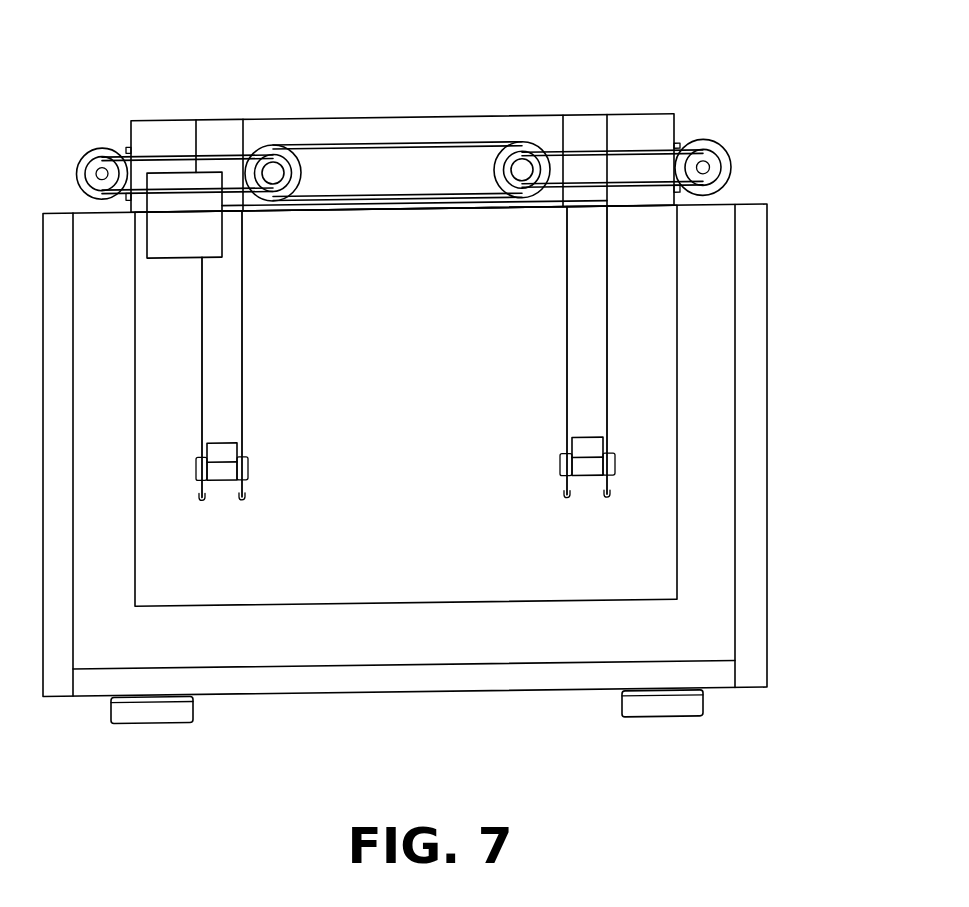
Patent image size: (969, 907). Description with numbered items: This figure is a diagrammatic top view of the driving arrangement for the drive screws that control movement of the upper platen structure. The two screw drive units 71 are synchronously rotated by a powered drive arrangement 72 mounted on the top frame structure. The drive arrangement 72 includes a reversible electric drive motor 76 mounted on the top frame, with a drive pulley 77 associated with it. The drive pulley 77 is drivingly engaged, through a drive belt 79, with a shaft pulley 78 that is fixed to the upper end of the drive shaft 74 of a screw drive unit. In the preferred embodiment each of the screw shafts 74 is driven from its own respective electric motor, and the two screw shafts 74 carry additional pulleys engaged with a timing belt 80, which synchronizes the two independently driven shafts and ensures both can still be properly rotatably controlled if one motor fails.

The screw drive unit 71 is at (268, 216).
The drive arrangement 72 is at (507, 226).
The drive shaft 74 is at (270, 147).
The reversible electric drive motor 76 is at (727, 182).
The drive pulley 77 is at (707, 164).
The shaft pulley 78 is at (498, 153).
The drive belt 79 is at (647, 151).
The timing belt 80 is at (347, 148).